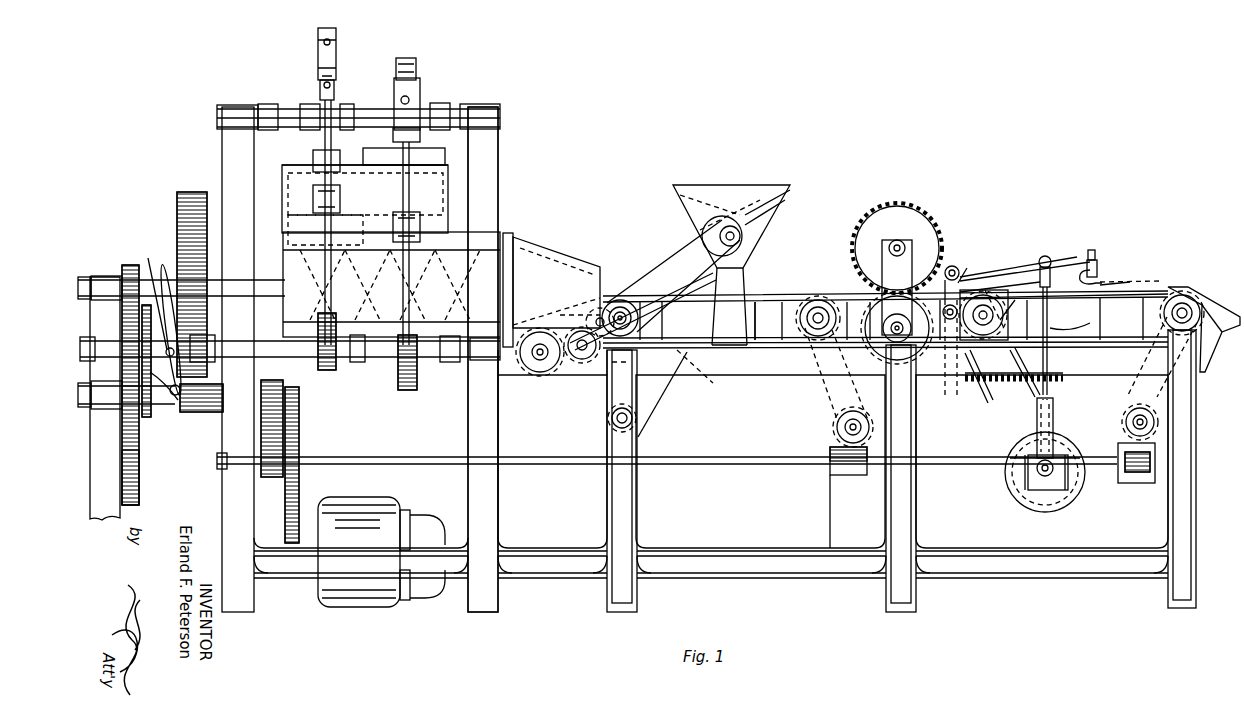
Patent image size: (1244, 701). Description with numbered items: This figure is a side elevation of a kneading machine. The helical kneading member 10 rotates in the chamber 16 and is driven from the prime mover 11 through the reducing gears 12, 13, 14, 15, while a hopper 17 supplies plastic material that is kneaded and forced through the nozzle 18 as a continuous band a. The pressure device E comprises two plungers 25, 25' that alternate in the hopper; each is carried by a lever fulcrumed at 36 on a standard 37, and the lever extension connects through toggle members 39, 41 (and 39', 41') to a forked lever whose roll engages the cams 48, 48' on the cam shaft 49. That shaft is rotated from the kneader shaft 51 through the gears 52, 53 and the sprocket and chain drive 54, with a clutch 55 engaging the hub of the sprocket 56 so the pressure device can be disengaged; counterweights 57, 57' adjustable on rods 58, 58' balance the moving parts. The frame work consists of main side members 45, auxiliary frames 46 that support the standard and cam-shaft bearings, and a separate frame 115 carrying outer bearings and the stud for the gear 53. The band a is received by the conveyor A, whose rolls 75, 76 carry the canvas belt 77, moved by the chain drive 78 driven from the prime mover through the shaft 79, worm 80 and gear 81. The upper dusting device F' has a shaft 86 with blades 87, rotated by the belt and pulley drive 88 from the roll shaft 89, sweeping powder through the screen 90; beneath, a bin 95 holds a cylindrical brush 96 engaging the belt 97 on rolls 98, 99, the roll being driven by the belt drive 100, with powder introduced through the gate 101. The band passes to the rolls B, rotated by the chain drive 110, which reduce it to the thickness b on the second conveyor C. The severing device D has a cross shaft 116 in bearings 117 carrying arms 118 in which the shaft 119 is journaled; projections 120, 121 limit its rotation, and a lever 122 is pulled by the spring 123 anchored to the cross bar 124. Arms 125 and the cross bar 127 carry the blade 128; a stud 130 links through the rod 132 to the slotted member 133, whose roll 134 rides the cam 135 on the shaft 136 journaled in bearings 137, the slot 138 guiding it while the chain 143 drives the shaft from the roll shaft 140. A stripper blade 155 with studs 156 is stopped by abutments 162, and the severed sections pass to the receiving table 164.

The helical kneading member 10 is at (452, 246).
The prime mover 11 is at (388, 512).
The reducing gear 12 is at (299, 426).
The reducing gear 13 is at (276, 426).
The reducing gear 14 is at (182, 412).
The reducing gear 15 is at (178, 216).
The chamber 16 is at (508, 236).
The hopper 17 is at (433, 196).
The nozzle 18 is at (588, 268).
The plunger 25 is at (312, 230).
The plunger 25' is at (404, 157).
The fulcrum 36 is at (448, 110).
The standard 37 is at (244, 170).
The toggle member 39 is at (339, 190).
The toggle member 39' is at (396, 209).
The toggle member 41 is at (335, 222).
The toggle member 41' is at (388, 243).
The main frame member 45 is at (632, 499).
The auxiliary frame 46 is at (498, 527).
The cam 48 is at (337, 357).
The cam 48' is at (394, 371).
The cam shaft 49 is at (378, 358).
The kneader shaft 51 is at (150, 290).
The gear 52 is at (128, 266).
The gear 53 is at (134, 494).
The sprocket and chain drive 54 is at (160, 408).
The clutch 55 is at (166, 300).
The sprocket 56 is at (150, 338).
The counterweight 57 is at (347, 61).
The counterweight 57' is at (422, 89).
The rod 58 is at (309, 54).
The rod 58' is at (438, 103).
The conveyor roll 75 is at (640, 312).
The conveyor roll 76 is at (816, 300).
The canvas belt 77 is at (780, 298).
The chain drive 78 is at (812, 392).
The shaft 79 is at (562, 466).
The worm 80 is at (830, 464).
The gear 81 is at (837, 428).
The shaft 86 is at (754, 277).
The blades 87 is at (760, 214).
The belt and pulley drive 88 is at (684, 250).
The roll shaft 89 is at (640, 270).
The screen 90 is at (758, 252).
The bin 95 is at (658, 401).
The cylindrical brush 96 is at (630, 362).
The belt 97 is at (580, 364).
The roll 98 is at (534, 376).
The roll 99 is at (636, 416).
The belt drive 100 is at (582, 326).
The gate 101 is at (710, 374).
The chain drive 110 is at (947, 395).
The separate frame 115 is at (96, 468).
The cross shaft 116 is at (975, 298).
The bearings 117 is at (964, 368).
The arms 118 is at (958, 268).
The shaft 119 is at (950, 268).
The projections 120 is at (897, 328).
The projections 121 is at (897, 328).
The lever 122 is at (942, 370).
The spring 123 is at (981, 384).
The cross bar 124 is at (1066, 382).
The arm 125 is at (1072, 264).
The cross bar 127 is at (1094, 256).
The blade 128 is at (1092, 270).
The stud 130 is at (1050, 256).
The rod 132 is at (1090, 325).
The member 133 is at (1056, 422).
The roll 134 is at (1062, 440).
The cam 135 is at (1090, 472).
The shaft 136 is at (1159, 378).
The bearings 137 is at (1030, 490).
The slot 138 is at (1030, 462).
The roll shaft 140 is at (986, 314).
The chain 143 is at (995, 398).
The stripper blade 155 is at (1102, 284).
The studs 156 is at (1105, 280).
The abutments 162 is at (1190, 265).
The receiving table 164 is at (1210, 326).
The conveyor A is at (762, 302).
The rolls B is at (906, 236).
The second conveyor C is at (1117, 293).
The severing device D is at (1005, 266).
The pressure device E is at (365, 174).
The upper dusting device F' is at (731, 216).
The continuous band a is at (617, 286).
The reduced band b is at (947, 298).